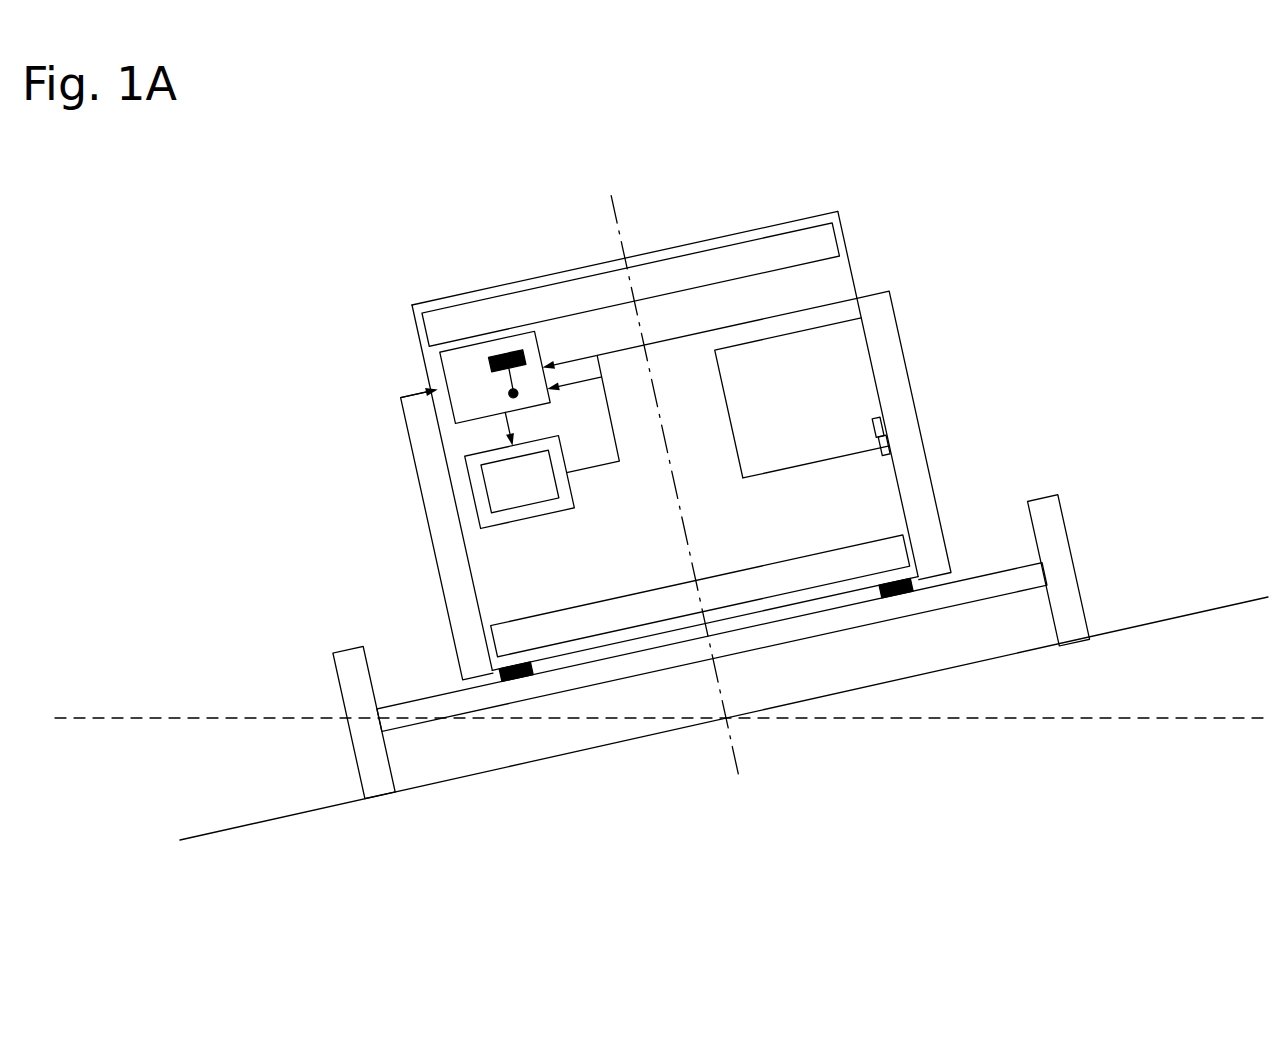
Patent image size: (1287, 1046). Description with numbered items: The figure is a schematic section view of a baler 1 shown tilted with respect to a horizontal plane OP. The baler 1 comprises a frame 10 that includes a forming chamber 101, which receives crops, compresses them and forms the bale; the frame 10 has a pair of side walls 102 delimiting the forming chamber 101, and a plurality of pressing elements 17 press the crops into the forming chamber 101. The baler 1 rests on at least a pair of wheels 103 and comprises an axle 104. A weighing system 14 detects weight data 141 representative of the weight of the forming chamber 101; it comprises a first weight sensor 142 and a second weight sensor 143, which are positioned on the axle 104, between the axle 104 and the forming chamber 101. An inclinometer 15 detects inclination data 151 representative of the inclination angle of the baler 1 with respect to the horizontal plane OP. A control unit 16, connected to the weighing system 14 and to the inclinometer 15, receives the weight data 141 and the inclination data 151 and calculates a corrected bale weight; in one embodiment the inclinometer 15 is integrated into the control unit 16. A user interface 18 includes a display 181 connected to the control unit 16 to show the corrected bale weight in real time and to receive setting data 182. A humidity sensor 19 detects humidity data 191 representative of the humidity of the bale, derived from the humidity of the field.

The baler 1 is at (270, 275).
The frame 10 is at (851, 225).
The forming chamber 101 is at (688, 305).
The side walls 102 is at (852, 278).
The wheels 103 is at (1055, 530).
The axle 104 is at (1005, 582).
The weighing system 14 is at (539, 683).
The weight data 141 is at (903, 350).
The first weight sensor 142 is at (521, 684).
The second weight sensor 143 is at (900, 601).
The inclinometer 15 is at (503, 350).
The inclination data 151 is at (455, 366).
The control unit 16 is at (451, 346).
The pressing elements 17 is at (762, 258).
The user interface 18 is at (470, 484).
The display 181 is at (500, 497).
The setting data 182 is at (620, 433).
The humidity sensor 19 is at (888, 433).
The humidity data 191 is at (832, 463).
The horizontal plane OP is at (1228, 717).